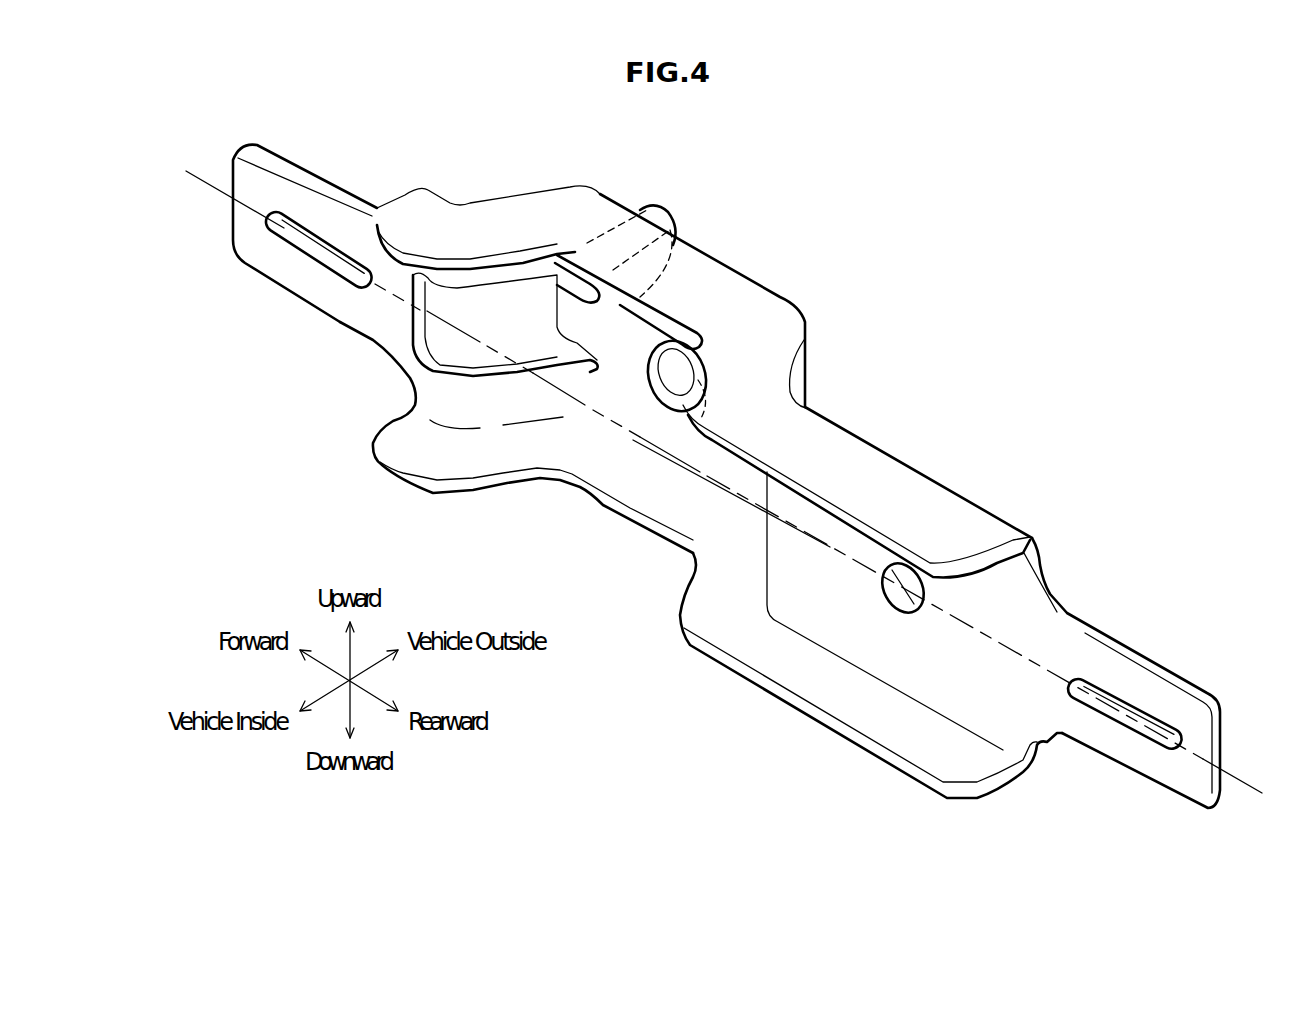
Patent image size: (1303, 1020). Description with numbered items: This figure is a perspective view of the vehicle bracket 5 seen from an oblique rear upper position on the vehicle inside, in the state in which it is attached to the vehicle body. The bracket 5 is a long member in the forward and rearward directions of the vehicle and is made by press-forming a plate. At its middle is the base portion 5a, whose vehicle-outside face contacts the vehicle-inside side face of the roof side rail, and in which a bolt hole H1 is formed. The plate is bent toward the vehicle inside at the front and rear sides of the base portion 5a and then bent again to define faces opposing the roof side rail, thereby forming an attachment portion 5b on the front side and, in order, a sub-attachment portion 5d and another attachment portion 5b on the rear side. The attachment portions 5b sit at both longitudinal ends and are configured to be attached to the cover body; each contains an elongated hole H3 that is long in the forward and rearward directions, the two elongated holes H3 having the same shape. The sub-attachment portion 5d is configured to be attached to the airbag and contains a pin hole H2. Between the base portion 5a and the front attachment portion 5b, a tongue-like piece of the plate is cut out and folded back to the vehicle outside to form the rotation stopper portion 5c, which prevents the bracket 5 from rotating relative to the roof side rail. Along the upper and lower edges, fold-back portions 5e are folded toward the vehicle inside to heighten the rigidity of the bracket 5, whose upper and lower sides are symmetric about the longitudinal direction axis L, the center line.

The vehicle bracket 5 is at (940, 250).
The base portion 5a is at (621, 345).
The attachment portion 5b is at (325, 180).
The rotation stopper portion 5c is at (657, 208).
The sub-attachment portion 5d is at (843, 530).
The fold-back portion 5e is at (962, 520).
The bolt hole H1 is at (670, 385).
The pin hole H2 is at (908, 608).
The elongated hole H3 is at (320, 258).
The longitudinal direction axis L is at (203, 178).